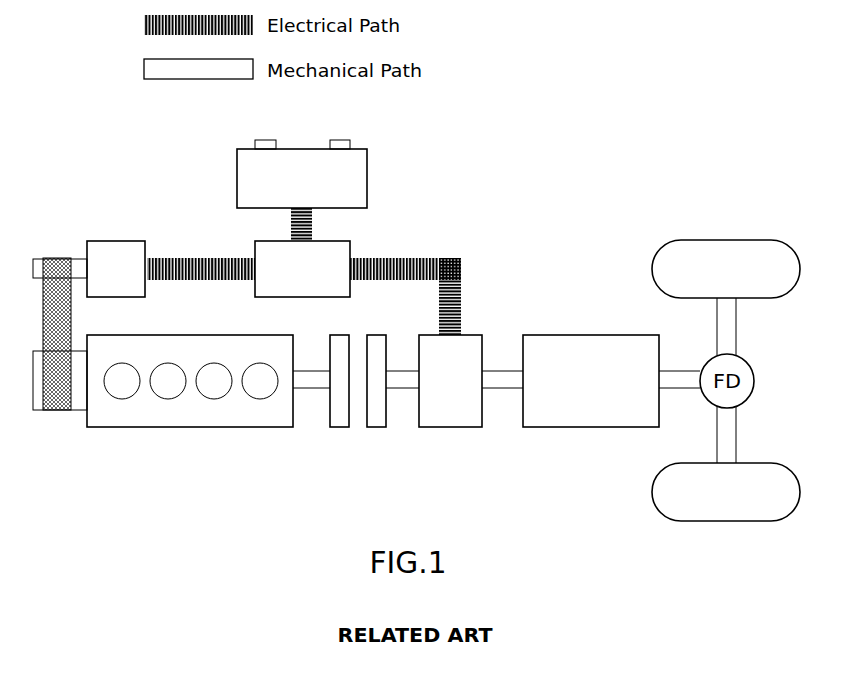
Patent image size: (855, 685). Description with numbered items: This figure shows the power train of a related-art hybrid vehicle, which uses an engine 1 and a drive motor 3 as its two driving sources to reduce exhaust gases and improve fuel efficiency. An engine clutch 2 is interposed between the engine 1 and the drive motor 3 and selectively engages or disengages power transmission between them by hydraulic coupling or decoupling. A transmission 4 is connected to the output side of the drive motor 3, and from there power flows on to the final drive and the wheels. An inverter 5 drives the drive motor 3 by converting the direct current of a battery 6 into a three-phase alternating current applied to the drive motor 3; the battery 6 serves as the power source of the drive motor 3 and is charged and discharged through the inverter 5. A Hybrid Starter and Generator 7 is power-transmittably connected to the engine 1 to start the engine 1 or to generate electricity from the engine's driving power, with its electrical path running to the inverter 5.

The engine 1 is at (190, 427).
The engine clutch 2 is at (377, 427).
The drive motor 3 is at (449, 427).
The transmission 4 is at (589, 427).
The inverter 5 is at (350, 243).
The battery 6 is at (367, 178).
The Hybrid Starter and Generator (HSG) 7 is at (113, 240).